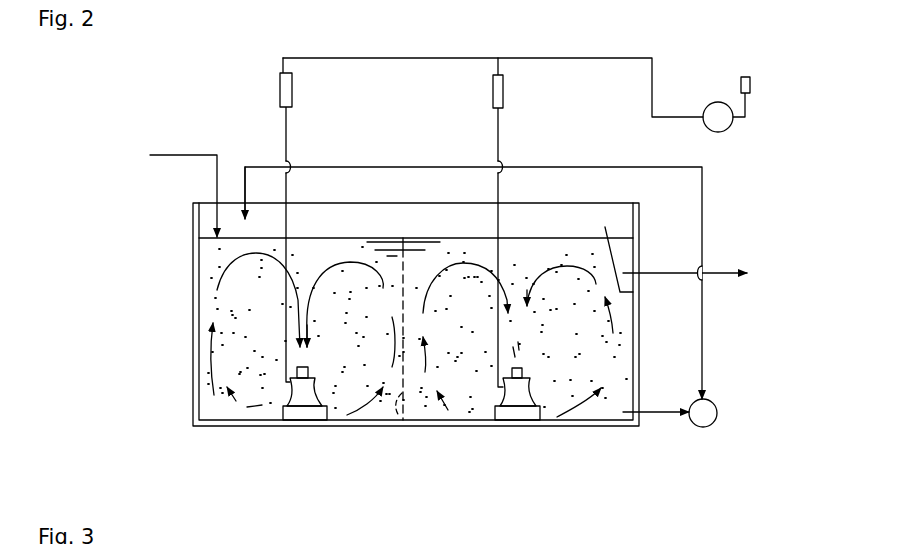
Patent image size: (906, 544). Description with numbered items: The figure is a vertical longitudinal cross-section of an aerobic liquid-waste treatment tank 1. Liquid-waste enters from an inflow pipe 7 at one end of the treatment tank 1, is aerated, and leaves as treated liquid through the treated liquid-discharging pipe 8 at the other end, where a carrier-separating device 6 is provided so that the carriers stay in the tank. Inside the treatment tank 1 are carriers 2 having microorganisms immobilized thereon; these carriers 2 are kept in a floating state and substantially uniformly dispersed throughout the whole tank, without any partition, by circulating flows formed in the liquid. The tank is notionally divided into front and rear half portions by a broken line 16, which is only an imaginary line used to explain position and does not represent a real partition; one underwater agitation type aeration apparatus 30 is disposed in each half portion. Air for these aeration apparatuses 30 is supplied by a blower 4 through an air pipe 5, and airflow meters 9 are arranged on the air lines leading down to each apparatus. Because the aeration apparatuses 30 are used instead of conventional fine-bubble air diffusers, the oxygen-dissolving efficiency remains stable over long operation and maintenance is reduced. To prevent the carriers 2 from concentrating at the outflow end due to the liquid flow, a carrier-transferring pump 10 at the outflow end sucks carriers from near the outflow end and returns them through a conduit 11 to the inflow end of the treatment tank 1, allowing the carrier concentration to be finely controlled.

The treatment tank 1 is at (192, 270).
The carriers 2 is at (215, 390).
The blower 4 is at (722, 131).
The air pipe 5 is at (578, 61).
The carrier-separating device 6 is at (617, 256).
The inflow pipe 7 is at (185, 153).
The treated liquid-discharging pipe 8 is at (726, 272).
The airflow meters 9 is at (492, 90).
The carrier-transferring pump 10 is at (718, 408).
The conduit 11 is at (405, 163).
The broken line 16 is at (401, 422).
The underwater agitation type aeration apparatus 30 is at (303, 405).